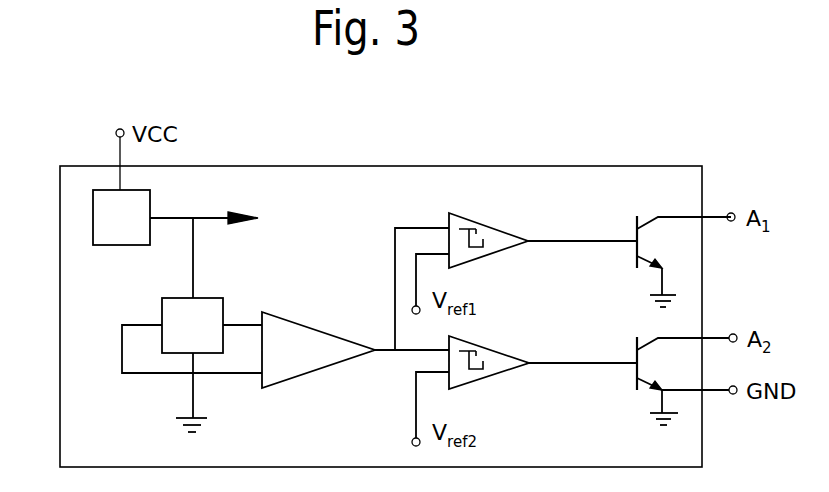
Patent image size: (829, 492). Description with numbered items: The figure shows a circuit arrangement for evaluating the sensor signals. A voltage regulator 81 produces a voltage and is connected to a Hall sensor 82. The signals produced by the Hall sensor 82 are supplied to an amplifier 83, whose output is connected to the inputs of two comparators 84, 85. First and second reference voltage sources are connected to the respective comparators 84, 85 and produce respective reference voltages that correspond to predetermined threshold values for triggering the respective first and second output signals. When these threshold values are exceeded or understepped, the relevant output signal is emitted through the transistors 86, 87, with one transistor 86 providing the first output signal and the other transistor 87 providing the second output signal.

The voltage regulator 81 is at (115, 238).
The Hall sensor 82 is at (197, 311).
The amplifier 83 is at (292, 358).
The comparator 84 is at (490, 233).
The comparator 85 is at (483, 366).
The transistor 86 is at (645, 215).
The transistor 87 is at (633, 383).